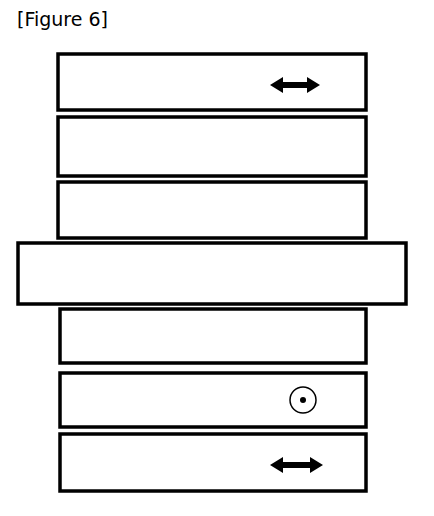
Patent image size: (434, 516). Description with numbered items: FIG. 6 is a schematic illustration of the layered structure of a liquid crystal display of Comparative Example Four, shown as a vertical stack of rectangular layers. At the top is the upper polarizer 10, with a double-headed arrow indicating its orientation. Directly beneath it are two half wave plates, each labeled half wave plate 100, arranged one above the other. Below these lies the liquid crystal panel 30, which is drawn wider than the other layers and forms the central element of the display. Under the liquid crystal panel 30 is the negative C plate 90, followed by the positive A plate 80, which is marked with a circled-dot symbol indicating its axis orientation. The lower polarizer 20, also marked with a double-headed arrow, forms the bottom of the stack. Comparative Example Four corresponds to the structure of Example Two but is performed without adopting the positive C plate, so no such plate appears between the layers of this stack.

The upper polarizer 10 is at (212, 82).
The half wave plate 100 is at (212, 177).
The liquid crystal panel 30 is at (212, 273).
The negative C plate 90 is at (213, 336).
The positive A plate 80 is at (213, 400).
The lower polarizer 20 is at (213, 462).